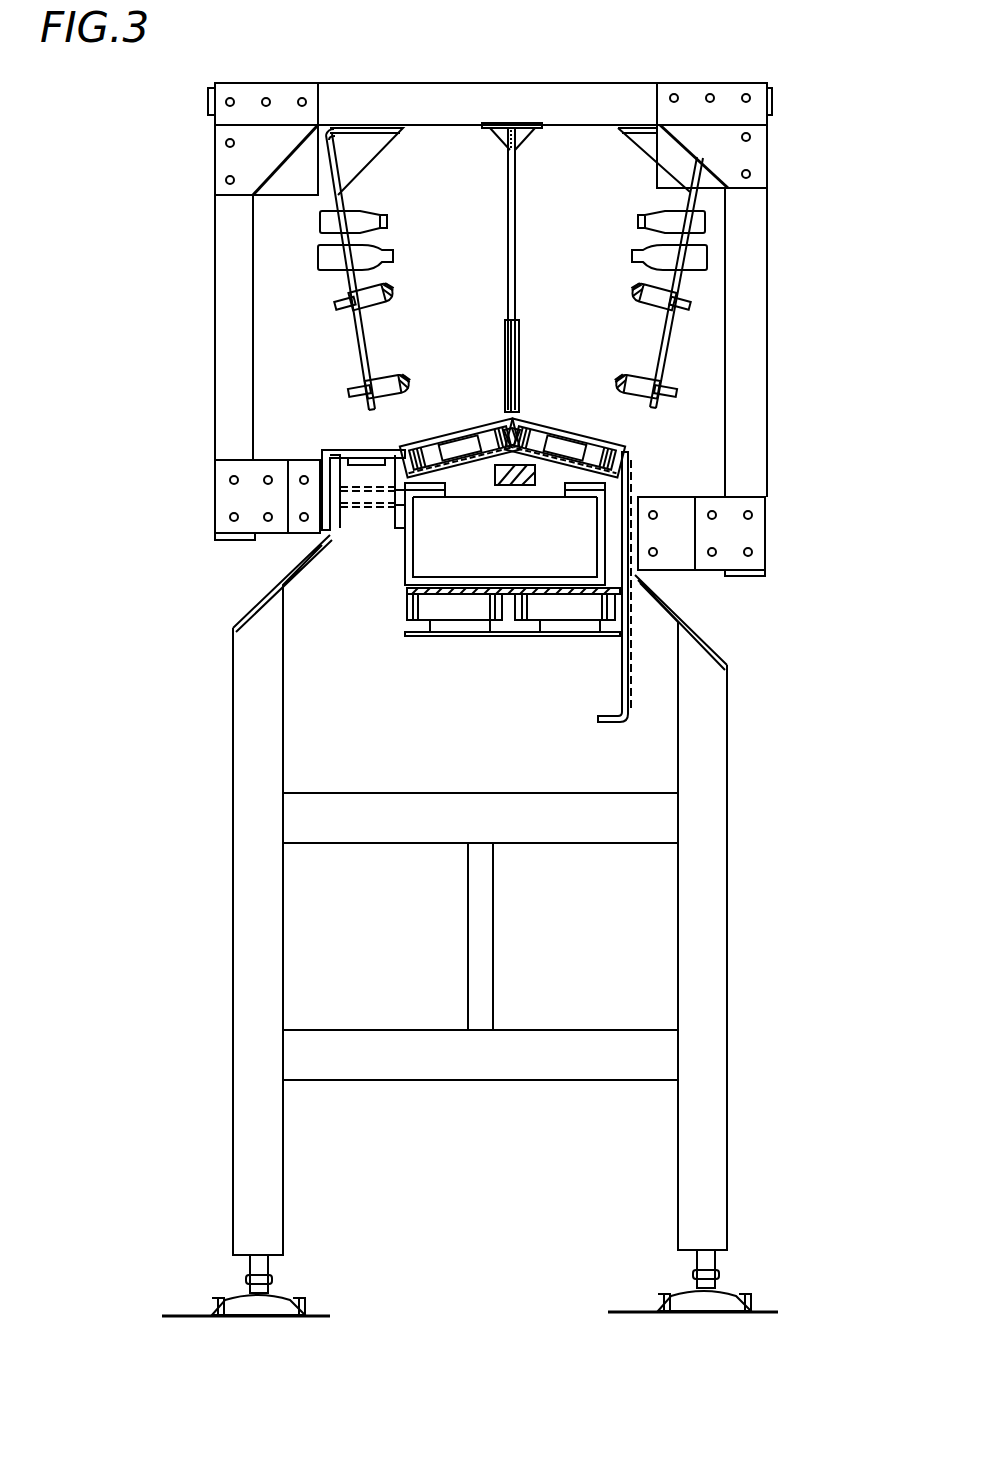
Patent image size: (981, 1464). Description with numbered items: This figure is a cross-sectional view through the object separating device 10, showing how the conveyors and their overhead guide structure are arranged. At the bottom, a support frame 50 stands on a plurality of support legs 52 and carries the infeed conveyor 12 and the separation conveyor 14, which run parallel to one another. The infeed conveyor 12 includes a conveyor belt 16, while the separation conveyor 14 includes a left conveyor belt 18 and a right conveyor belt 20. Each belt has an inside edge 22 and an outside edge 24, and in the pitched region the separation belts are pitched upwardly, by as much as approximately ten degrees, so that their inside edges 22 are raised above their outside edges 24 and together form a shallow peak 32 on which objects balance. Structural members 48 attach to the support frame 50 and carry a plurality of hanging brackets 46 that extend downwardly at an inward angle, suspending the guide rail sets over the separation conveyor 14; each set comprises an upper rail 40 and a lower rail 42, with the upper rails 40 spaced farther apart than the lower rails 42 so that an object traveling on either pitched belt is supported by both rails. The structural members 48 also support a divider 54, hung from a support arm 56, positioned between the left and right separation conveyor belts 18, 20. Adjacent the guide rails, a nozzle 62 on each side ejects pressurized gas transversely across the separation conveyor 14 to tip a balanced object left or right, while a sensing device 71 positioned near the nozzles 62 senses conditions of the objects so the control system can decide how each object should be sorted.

The object separating device 10 is at (790, 58).
The infeed conveyor 12 is at (354, 582).
The separation conveyor 14 is at (484, 694).
The conveyor belt 16 is at (338, 450).
The left conveyor belt 18 is at (456, 440).
The right conveyor belt 20 is at (554, 442).
The inside edge 22 is at (506, 430).
The outside edge 24 is at (638, 450).
The shallow peak 32 is at (520, 425).
The upper rail 40 is at (402, 300).
The lower rail 42 is at (388, 376).
The hanging bracket 46 is at (355, 342).
The structural member 48 is at (588, 83).
The support frame 50 is at (774, 772).
The support leg 52 is at (272, 1174).
The divider 54 is at (504, 340).
The support arm 56 is at (518, 190).
The nozzle 62 is at (396, 256).
The sensing device 71 is at (376, 213).